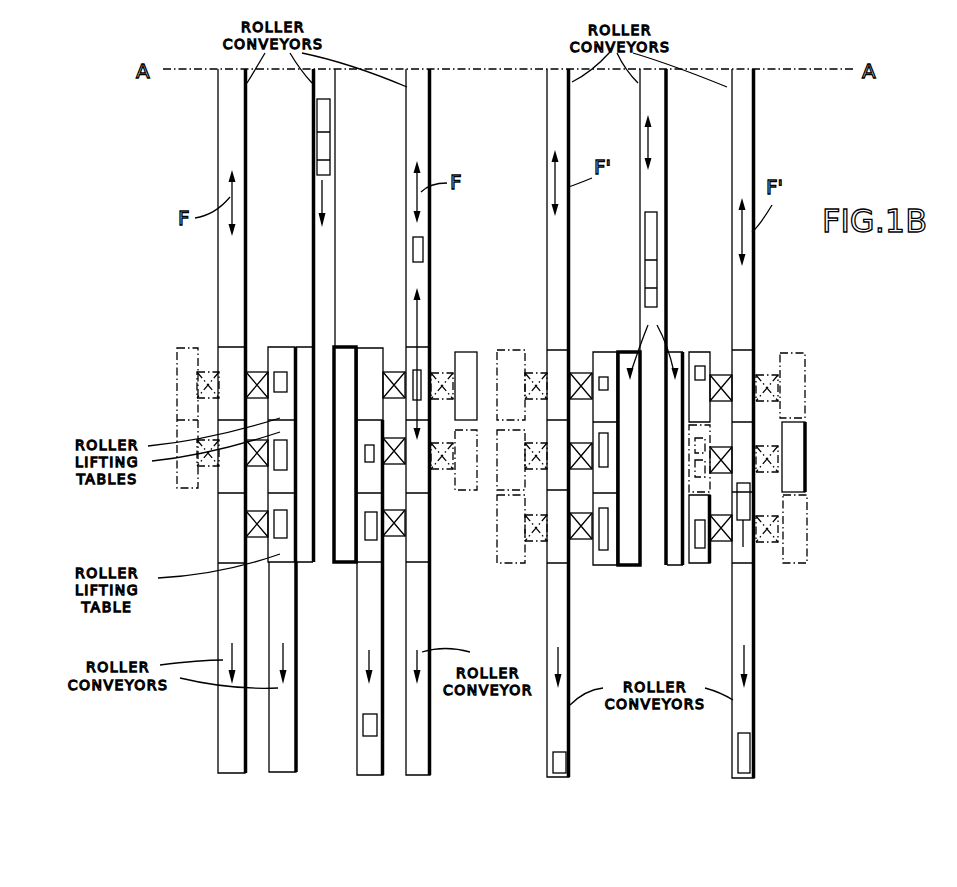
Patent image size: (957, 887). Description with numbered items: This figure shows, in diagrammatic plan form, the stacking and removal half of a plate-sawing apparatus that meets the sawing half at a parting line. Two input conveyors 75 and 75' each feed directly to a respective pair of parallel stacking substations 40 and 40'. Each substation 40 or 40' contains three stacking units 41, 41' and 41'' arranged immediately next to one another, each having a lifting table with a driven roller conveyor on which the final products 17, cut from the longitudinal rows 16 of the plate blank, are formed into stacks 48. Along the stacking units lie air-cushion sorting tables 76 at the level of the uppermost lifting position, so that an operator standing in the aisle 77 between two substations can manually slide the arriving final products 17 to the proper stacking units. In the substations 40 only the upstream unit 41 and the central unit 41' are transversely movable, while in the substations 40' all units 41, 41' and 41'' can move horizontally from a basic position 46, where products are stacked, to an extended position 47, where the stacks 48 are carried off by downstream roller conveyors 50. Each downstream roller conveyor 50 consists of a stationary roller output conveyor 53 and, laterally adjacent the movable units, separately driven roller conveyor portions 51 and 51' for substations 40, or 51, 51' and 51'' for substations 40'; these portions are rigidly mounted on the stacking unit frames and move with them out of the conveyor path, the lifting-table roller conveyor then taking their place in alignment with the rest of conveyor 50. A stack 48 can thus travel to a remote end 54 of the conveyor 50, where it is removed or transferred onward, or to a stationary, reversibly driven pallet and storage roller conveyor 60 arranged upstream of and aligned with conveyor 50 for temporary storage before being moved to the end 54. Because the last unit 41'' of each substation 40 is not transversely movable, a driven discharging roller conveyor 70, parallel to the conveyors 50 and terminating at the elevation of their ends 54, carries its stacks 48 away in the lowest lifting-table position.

The longitudinal rows 16 is at (325, 99).
The final products 17 is at (646, 270).
The stacking substation 40 is at (397, 494).
The stacking substation 40' is at (648, 415).
The upstream stacking unit 41 is at (489, 334).
The central stacking unit 41' is at (510, 476).
The last stacking unit 41'' is at (490, 586).
The basic position 46 is at (705, 488).
The extended position 47 is at (467, 370).
The stacks 48 is at (423, 250).
The downstream roller conveyor 50 is at (230, 346).
The roller conveyor portion 51 is at (490, 438).
The roller conveyor portion 51' is at (501, 512).
The roller conveyor portion 51'' is at (688, 552).
The stationary roller output conveyor 53 is at (222, 739).
The end of roller conveyor 54 is at (566, 776).
The pallet and/or storage roller conveyor 60 is at (217, 112).
The discharging roller conveyor 70 is at (360, 757).
The input conveyor 75 is at (346, 315).
The input conveyor 75' is at (682, 317).
The air-cushion sorting table 76 is at (303, 378).
The aisle 77 is at (322, 532).